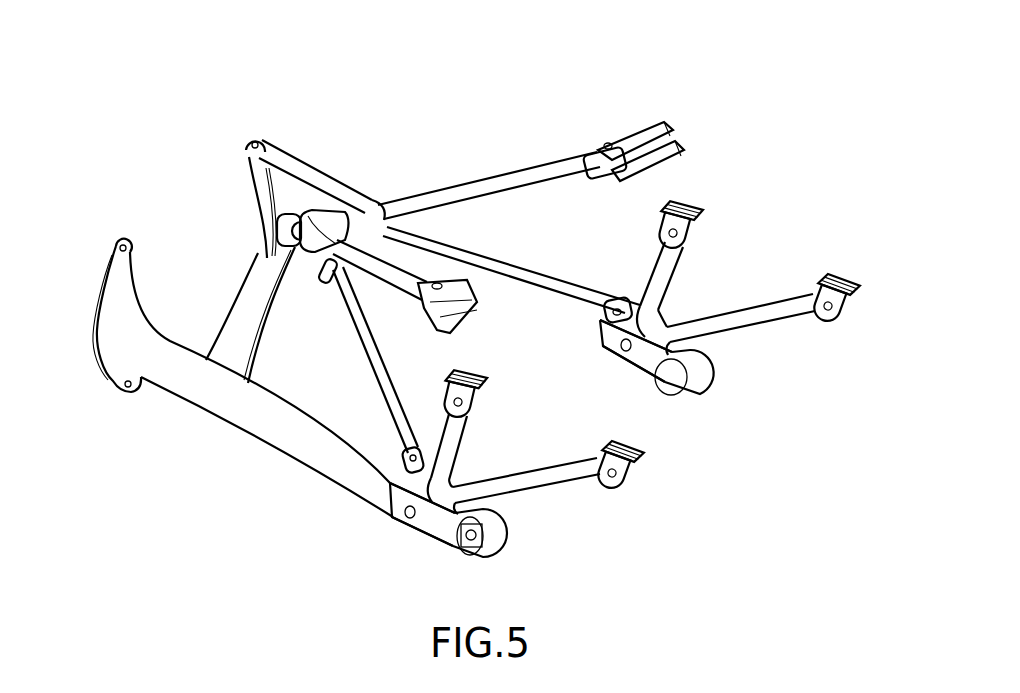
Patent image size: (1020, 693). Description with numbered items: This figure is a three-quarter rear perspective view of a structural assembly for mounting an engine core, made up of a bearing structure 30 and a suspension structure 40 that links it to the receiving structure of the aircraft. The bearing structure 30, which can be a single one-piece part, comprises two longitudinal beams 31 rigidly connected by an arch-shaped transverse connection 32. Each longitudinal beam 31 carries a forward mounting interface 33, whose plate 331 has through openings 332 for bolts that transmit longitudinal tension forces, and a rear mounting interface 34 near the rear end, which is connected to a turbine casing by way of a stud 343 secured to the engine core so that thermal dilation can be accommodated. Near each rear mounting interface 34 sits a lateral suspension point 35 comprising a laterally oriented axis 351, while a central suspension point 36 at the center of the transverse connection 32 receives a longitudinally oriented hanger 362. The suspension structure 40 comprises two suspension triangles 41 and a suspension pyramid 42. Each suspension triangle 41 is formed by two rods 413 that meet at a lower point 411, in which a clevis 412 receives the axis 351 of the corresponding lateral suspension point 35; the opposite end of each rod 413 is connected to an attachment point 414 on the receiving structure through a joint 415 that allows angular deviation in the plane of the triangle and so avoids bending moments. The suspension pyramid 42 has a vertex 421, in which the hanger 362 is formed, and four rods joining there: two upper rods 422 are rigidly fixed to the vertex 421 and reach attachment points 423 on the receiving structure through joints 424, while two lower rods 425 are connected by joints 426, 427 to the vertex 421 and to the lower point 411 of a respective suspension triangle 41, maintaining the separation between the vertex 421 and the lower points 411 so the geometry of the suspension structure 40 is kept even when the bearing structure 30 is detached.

The bearing structure 30 is at (170, 408).
The longitudinal beam 31 is at (237, 420).
The transverse connection 32 is at (242, 301).
The forward mounting interface 33 is at (262, 200).
The plate 331 is at (112, 259).
The through opening 332 is at (127, 244).
The rear mounting interface 34 is at (473, 548).
The lateral suspension point 35 is at (393, 522).
The axis 351 is at (410, 518).
The stud 343 is at (676, 392).
The central suspension point 36 is at (302, 183).
The hanger 362 is at (322, 210).
The suspension structure 40 is at (761, 62).
The suspension triangle 41 is at (745, 258).
The lower point 411 is at (444, 478).
The clevis 412 is at (390, 482).
The rod 413 is at (462, 435).
The attachment point 414 is at (480, 385).
The joint 415 is at (450, 393).
The suspension pyramid 42 is at (550, 147).
The vertex 421 is at (280, 250).
The upper rod 422 is at (467, 191).
The attachment point 423 is at (682, 135).
The joint 424 is at (620, 165).
The lower rod 425 is at (500, 270).
The joint 426 is at (323, 273).
The joint 427 is at (410, 450).